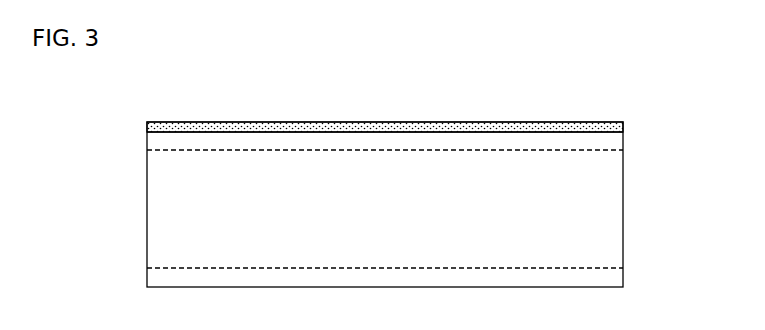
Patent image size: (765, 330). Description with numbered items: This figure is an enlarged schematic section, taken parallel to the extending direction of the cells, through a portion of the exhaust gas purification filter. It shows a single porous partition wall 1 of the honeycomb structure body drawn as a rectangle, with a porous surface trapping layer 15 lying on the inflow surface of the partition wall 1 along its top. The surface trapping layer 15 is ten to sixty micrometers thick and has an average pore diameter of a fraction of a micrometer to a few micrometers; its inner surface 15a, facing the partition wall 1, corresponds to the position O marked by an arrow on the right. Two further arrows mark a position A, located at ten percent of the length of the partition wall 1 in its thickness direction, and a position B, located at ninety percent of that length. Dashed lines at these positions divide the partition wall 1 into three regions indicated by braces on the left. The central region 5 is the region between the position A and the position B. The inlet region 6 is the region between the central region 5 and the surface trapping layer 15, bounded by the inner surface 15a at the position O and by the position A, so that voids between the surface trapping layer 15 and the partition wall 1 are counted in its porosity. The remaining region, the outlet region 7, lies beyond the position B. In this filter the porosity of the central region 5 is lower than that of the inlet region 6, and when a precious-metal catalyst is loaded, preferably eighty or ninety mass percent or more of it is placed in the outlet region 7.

The partition wall 1 is at (626, 213).
The surface trapping layer 15 is at (262, 122).
The inner surface 15a is at (405, 136).
The inlet region 6 is at (147, 134).
The central region 5 is at (147, 152).
The outlet region 7 is at (147, 268).
The position O is at (627, 132).
The position A is at (627, 151).
The position B is at (627, 268).